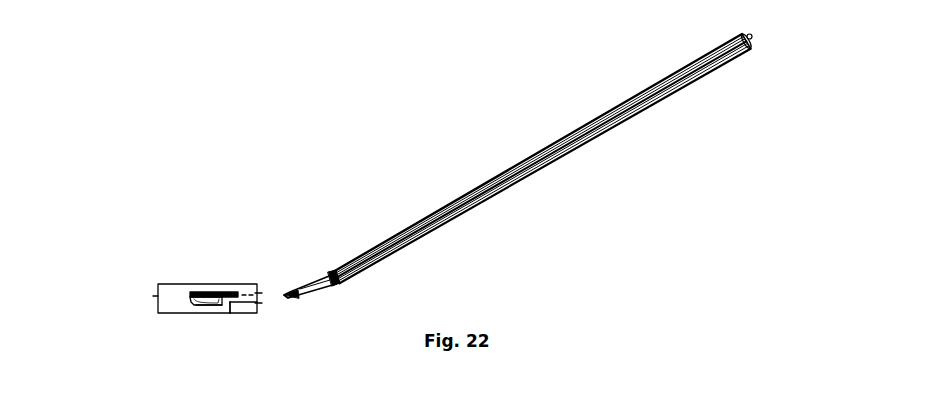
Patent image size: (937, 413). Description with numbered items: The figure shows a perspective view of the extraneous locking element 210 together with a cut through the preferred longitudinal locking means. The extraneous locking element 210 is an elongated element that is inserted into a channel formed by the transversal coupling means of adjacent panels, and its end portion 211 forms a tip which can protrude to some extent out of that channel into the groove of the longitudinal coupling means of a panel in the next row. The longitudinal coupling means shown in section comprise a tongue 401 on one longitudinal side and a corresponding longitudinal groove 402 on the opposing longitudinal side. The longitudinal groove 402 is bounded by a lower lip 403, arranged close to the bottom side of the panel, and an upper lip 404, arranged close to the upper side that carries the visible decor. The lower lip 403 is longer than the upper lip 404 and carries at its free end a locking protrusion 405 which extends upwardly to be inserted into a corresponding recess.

The extraneous locking element 210 is at (457, 192).
The end portion 211 is at (246, 284).
The tongue 401 is at (202, 284).
The longitudinal groove 402 is at (190, 298).
The lower lip 403 is at (210, 306).
The upper lip 404 is at (186, 285).
The locking protrusion 405 is at (230, 305).